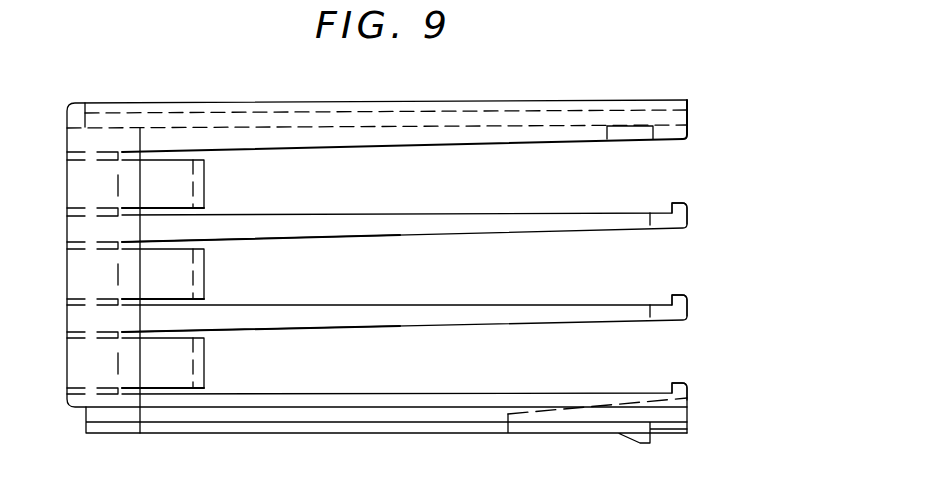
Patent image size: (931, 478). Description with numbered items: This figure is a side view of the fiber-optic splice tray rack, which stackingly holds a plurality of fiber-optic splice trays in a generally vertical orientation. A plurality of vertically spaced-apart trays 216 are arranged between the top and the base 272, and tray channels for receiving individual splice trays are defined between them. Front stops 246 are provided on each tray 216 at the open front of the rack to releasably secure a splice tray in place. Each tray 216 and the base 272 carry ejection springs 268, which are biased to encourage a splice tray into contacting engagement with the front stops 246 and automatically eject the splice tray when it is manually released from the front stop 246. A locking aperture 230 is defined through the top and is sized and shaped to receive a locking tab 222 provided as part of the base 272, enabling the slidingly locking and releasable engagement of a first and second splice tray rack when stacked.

The tray 216 is at (317, 322).
The locking tab 222 is at (630, 440).
The locking aperture 230 is at (633, 130).
The front stop 246 is at (676, 383).
The ejection spring 268 is at (204, 186).
The base 272 is at (440, 393).